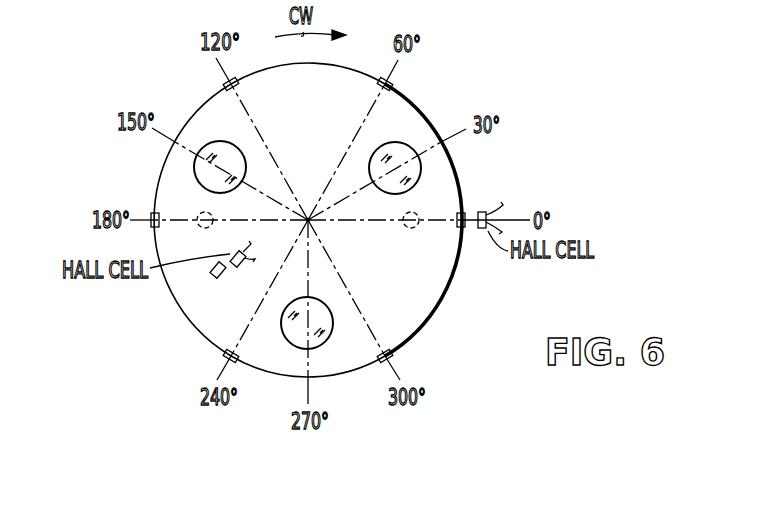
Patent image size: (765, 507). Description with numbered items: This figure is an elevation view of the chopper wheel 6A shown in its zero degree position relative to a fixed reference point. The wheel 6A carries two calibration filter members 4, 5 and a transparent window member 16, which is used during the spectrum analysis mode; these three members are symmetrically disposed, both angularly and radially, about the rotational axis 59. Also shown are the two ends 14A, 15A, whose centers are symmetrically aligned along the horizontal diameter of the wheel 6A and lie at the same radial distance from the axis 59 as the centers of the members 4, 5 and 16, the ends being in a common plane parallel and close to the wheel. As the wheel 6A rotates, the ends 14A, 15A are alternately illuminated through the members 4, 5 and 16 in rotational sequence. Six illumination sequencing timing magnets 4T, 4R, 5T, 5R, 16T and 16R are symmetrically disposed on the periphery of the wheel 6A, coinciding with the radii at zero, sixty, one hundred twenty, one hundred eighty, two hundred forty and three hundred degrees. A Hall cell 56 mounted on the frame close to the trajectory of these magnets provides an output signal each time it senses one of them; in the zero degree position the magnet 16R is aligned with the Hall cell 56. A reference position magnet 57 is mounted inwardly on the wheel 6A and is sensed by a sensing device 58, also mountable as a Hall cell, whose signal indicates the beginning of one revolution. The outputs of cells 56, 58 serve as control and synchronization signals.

The chopper wheel 6A is at (320, 118).
The calibration filter member 4 is at (226, 151).
The transparent window member 16 is at (397, 154).
The calibration filter member 5 is at (292, 333).
The end 15A is at (201, 211).
The end 14A is at (409, 228).
The rotational axis 59 is at (312, 224).
The illumination sequencing timing magnet 4R is at (233, 80).
The illumination sequencing timing magnet 5T is at (391, 86).
The illumination sequencing timing magnet 5R is at (227, 353).
The illumination sequencing timing magnet 4T is at (393, 354).
The illumination sequencing timing magnet 16T is at (155, 228).
The illumination sequencing timing magnet 16R is at (461, 212).
The Hall cell 56 is at (486, 230).
The reference position magnet 57 is at (213, 275).
The sensing device 58 is at (241, 268).